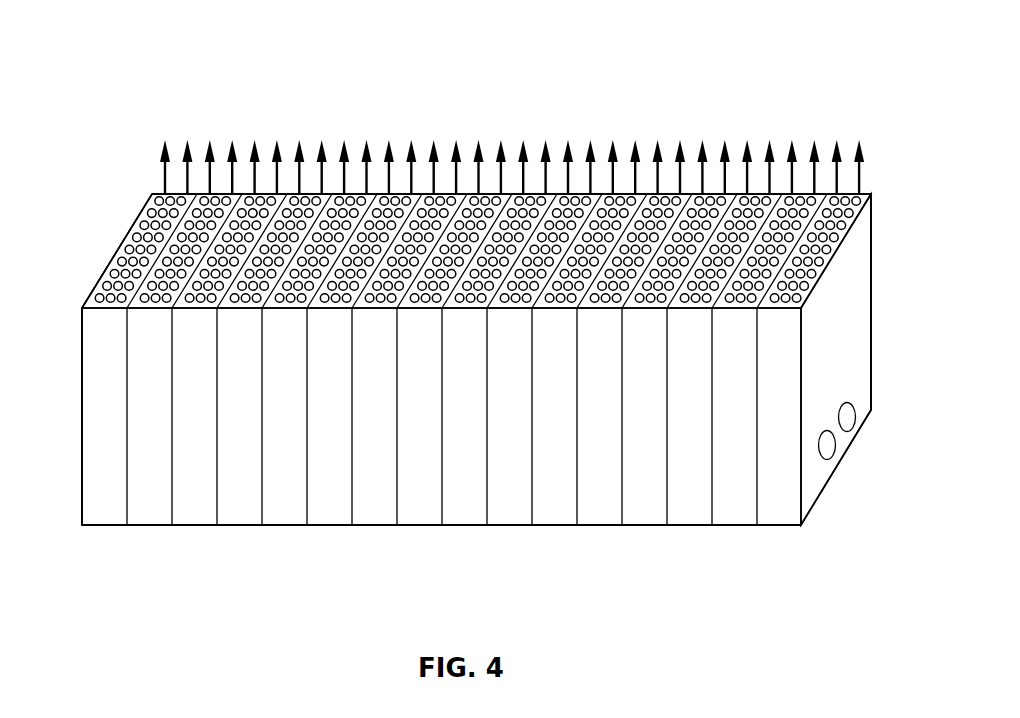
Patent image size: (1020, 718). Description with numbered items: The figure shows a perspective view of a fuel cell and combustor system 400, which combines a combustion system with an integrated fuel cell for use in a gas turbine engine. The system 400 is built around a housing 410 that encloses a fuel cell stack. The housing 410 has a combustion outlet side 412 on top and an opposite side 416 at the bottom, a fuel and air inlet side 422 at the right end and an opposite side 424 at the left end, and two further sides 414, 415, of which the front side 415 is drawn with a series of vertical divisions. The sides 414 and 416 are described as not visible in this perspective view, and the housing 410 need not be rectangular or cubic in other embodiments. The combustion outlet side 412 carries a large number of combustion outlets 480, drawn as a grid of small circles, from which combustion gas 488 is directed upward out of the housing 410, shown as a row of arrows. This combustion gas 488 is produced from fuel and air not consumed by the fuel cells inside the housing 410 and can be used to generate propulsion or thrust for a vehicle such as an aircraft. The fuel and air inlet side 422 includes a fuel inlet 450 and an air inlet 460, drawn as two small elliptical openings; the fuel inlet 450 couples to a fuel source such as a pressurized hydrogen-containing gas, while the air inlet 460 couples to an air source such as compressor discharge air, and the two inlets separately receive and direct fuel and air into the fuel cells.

The fuel cell and combustor system 400 is at (160, 76).
The housing 410 is at (118, 255).
The combustion outlet side 412 is at (799, 190).
The side 414 is at (878, 226).
The side 415 is at (500, 491).
The side 416 is at (640, 534).
The fuel and air inlet side 422 is at (852, 320).
The side 424 is at (76, 457).
The fuel inlet 450 is at (830, 448).
The air inlet 460 is at (850, 422).
The combustion outlets 480 is at (483, 205).
The combustion gas 488 is at (163, 175).